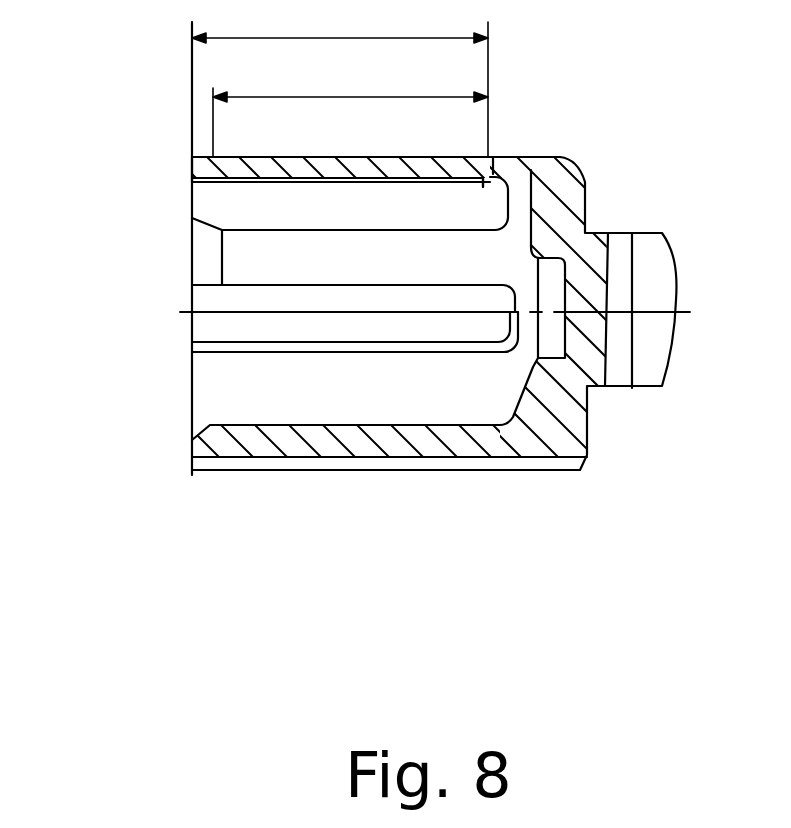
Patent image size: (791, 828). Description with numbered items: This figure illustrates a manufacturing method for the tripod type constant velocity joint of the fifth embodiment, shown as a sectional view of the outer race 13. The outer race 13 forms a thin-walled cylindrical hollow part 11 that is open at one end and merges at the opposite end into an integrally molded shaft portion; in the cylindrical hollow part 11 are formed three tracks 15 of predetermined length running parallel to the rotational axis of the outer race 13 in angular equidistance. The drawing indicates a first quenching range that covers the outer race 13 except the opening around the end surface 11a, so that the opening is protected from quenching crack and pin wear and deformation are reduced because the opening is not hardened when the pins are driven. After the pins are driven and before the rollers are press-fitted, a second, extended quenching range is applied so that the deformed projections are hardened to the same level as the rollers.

The cylindrical hollow part 11 is at (255, 160).
The end surface 11a is at (190, 172).
The outer race 13 is at (393, 493).
The tracks 15 is at (490, 157).